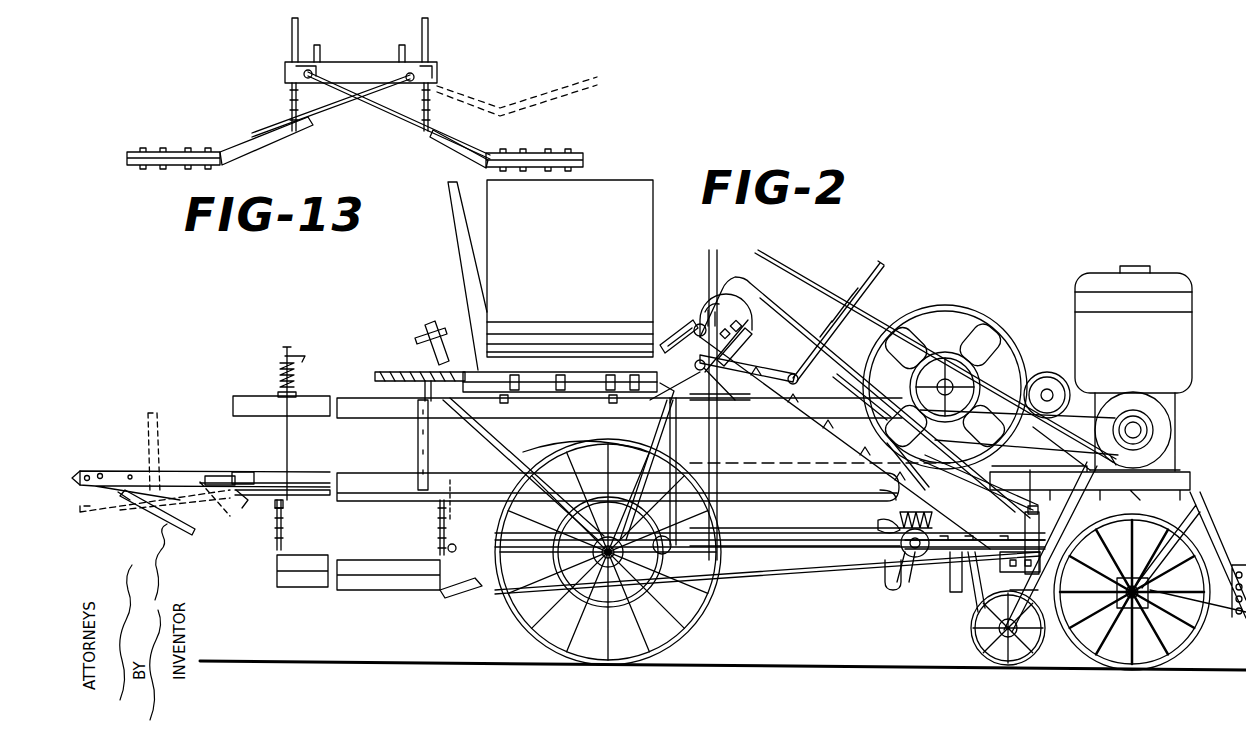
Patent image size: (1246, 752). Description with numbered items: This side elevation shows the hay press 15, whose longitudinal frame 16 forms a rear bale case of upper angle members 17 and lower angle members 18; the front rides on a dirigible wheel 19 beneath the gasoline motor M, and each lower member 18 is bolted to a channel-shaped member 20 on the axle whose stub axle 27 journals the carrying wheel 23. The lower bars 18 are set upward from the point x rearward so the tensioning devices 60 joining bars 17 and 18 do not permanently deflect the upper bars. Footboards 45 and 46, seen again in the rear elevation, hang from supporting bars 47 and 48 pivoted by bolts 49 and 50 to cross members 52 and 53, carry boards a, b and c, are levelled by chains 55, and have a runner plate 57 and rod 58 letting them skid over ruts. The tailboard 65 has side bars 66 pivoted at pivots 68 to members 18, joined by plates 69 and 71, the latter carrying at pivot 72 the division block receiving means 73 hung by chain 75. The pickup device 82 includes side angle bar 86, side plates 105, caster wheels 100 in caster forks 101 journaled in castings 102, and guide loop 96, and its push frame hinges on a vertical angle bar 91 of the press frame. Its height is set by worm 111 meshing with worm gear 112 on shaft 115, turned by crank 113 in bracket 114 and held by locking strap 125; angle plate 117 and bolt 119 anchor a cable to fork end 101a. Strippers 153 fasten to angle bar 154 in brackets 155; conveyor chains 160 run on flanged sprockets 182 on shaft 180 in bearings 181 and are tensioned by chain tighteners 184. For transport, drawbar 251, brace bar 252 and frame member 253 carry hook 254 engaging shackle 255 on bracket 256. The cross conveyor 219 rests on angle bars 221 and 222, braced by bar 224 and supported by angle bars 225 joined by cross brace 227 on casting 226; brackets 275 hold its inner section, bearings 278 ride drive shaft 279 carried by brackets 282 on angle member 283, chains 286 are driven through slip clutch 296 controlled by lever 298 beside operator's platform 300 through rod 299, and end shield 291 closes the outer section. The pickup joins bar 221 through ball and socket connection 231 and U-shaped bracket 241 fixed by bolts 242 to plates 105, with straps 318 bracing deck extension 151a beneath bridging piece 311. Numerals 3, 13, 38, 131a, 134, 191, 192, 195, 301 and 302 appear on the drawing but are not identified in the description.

In FIG. 13, the frame 16 is at (370, 50).
In FIG. 2, the frame 16 is at (820, 447).
In FIG. 13, the lower angle members 18 is at (404, 53).
In FIG. 2, the lower angle members 18 is at (793, 498).
In FIG. 13, the transverse angle member 52 is at (432, 70).
In FIG. 2, the transverse angle member 52 is at (288, 500).
In FIG. 13, the supporting member 47 is at (490, 103).
In FIG. 2, the supporting member 47 is at (277, 566).
In FIG. 13, the footboard 46 is at (190, 149).
In FIG. 13, the footboard 45 is at (548, 149).
In FIG. 2, the footboard 45 is at (360, 582).
In FIG. 13, the pivot bolt 49 is at (408, 80).
In FIG. 2, the pivot bolt 49 is at (288, 486).
In FIG. 13, the chains 55 is at (428, 120).
In FIG. 2, the chains 55 is at (436, 550).
In FIG. 13, the board a is at (478, 148).
In FIG. 2, the board a is at (364, 571).
In FIG. 13, the board b is at (519, 153).
In FIG. 13, the board c is at (580, 156).
In FIG. 2, the board c is at (354, 595).
In FIG. 2, the end shield 291 is at (577, 223).
In FIG. 2, the cross conveyor unit 219 is at (448, 236).
In FIG. 2, the horizontal angle member 283 is at (563, 398).
In FIG. 2, the brackets 282 is at (610, 391).
In FIG. 2, the conveyor chains 286 is at (555, 395).
In FIG. 2, the journal bearings 278 is at (620, 384).
In FIG. 2, the drive shaft 279 is at (641, 370).
In FIG. 2, the overlapping piece 311 is at (652, 348).
In FIG. 2, the brackets 275 is at (670, 390).
In FIG. 2, the control lever 298 is at (430, 320).
In FIG. 2, the operator's platform 300 is at (393, 372).
In FIG. 2, the angle bar 222 is at (444, 352).
In FIG. 2, the rod 299 is at (462, 416).
In FIG. 2, the upper angle members 17 is at (752, 432).
In FIG. 2, the point x is at (420, 458).
In FIG. 2, the transverse angle member 53 is at (450, 480).
In FIG. 2, the tensioning devices 60 is at (289, 356).
In FIG. 2, the tailboard 65 is at (195, 468).
In FIG. 2, the side frame members 66 is at (162, 472).
In FIG. 2, the plate 69 is at (206, 478).
In FIG. 2, the pivots 68 is at (239, 474).
In FIG. 2, the plate 71 is at (106, 474).
In FIG. 2, the pivot 72 is at (140, 490).
In FIG. 2, the division block receiving means 73 is at (159, 523).
In FIG. 2, the chain 75 is at (198, 538).
In FIG. 2, the drawbar 251 is at (766, 548).
In FIG. 2, the frame member 253 is at (732, 437).
In FIG. 2, the hook 254 is at (682, 574).
In FIG. 2, the shackle 255 is at (244, 484).
In FIG. 2, the bracket 256 is at (264, 500).
In FIG. 2, the supporting member 48 is at (442, 569).
In FIG. 2, the runner plate 57 is at (457, 589).
In FIG. 2, the rod 58 is at (455, 549).
In FIG. 2, the pivot bolt 50 is at (446, 518).
In FIG. 2, the carrying wheel 23 is at (530, 634).
In FIG. 2, the stub axle 27 is at (586, 617).
In FIG. 2, the channel-shaped member 20 is at (598, 505).
In FIG. 2, the casting 226 is at (629, 612).
In FIG. 2, the cross brace 227 is at (577, 456).
In FIG. 2, the angle bars 225 is at (644, 458).
In FIG. 2, the sprocket 38 is at (673, 562).
In FIG. 2, the diagonal brace bar 252 is at (828, 550).
In FIG. 2, the bar 191 is at (772, 590).
In FIG. 2, the rail 195 is at (765, 488).
In FIG. 2, the diagonal brace bar 224 is at (675, 440).
In FIG. 2, the angle bar 221 is at (700, 400).
In FIG. 2, the section line 3 is at (698, 476).
In FIG. 2, the vertical angle bar 91 is at (878, 478).
In FIG. 2, the conveyor chains 160 is at (836, 435).
In FIG. 2, the pickup device 82 is at (849, 367).
In FIG. 2, the side plates 105 is at (842, 368).
In FIG. 2, the shaft 180 is at (723, 311).
In FIG. 2, the bearings 181 is at (740, 312).
In FIG. 2, the flanged sprockets 182 is at (700, 310).
In FIG. 2, the curved upper extension 151a is at (686, 318).
In FIG. 2, the bolts 242 is at (725, 336).
In FIG. 2, the straps 318 is at (700, 333).
In FIG. 2, the U-shaped angle bracket 241 is at (742, 338).
In FIG. 2, the ball and socket connection 231 is at (696, 354).
In FIG. 2, the slip clutch 296 is at (696, 366).
In FIG. 2, the hay press 15 is at (1000, 332).
In FIG. 2, the hub 301 is at (938, 393).
In FIG. 2, the idler pulley 302 is at (1082, 409).
In FIG. 2, the gasoline motor M is at (1189, 331).
In FIG. 2, the platform 13 is at (1062, 472).
In FIG. 2, the supporting bracket 114 is at (922, 493).
In FIG. 2, the worm 111 is at (929, 496).
In FIG. 2, the chain tightener 184 is at (956, 528).
In FIG. 2, the side angle bar 86 is at (989, 528).
In FIG. 2, the angle plate 117 is at (982, 539).
In FIG. 2, the bolt 119 is at (1022, 536).
In FIG. 2, the upper end of caster fork 101a is at (1034, 516).
In FIG. 2, the locking strap 125 is at (873, 522).
In FIG. 2, the crank 113 is at (870, 560).
In FIG. 2, the guide loop 96 is at (880, 587).
In FIG. 2, the shaft 115 is at (908, 580).
In FIG. 2, the worm gear 112 is at (916, 594).
In FIG. 2, the link 192 is at (941, 576).
In FIG. 2, the brackets 155 is at (948, 592).
In FIG. 2, the transverse angle bar 154 is at (955, 608).
In FIG. 2, the strippers 153 is at (972, 612).
In FIG. 2, the bracket 131a is at (1014, 560).
In FIG. 2, the bar 134 is at (1018, 596).
In FIG. 2, the caster fork 101 is at (1022, 610).
In FIG. 2, the casting 102 is at (1054, 572).
In FIG. 2, the caster wheels 100 is at (1035, 656).
In FIG. 2, the dirigible wheel 19 is at (1185, 644).